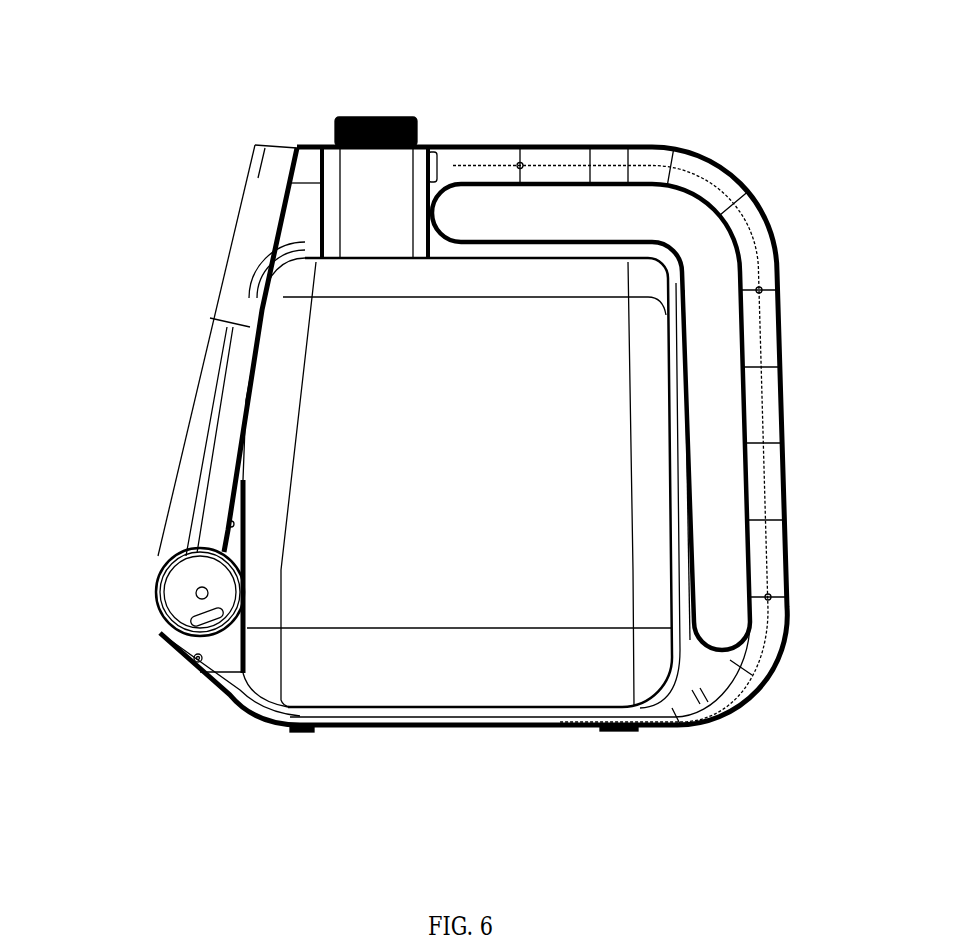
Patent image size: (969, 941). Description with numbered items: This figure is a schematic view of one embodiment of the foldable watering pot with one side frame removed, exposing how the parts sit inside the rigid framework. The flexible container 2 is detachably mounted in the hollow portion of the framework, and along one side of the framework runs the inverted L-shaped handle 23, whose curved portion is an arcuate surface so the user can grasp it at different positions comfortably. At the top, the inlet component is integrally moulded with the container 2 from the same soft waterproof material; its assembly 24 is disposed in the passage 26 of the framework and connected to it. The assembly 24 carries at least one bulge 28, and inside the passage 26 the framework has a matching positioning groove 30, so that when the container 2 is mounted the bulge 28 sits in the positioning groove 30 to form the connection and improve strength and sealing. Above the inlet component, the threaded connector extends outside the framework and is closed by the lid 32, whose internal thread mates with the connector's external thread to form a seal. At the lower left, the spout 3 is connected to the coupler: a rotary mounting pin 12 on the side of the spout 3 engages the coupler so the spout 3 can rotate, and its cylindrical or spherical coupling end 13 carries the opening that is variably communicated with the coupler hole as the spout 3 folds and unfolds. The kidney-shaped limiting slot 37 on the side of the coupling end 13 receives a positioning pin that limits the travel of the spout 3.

The flexible container 2 is at (503, 460).
The spout 3 is at (220, 405).
The rotary mounting pin 12 is at (205, 588).
The coupling end 13 is at (180, 587).
The inverted L-shaped handle 23 is at (743, 209).
The assembly 24 is at (388, 203).
The passage 26 is at (317, 237).
The bulge 28 is at (317, 163).
The positioning groove 30 is at (305, 149).
The lid 32 is at (362, 118).
The limiting slot 37 is at (200, 620).